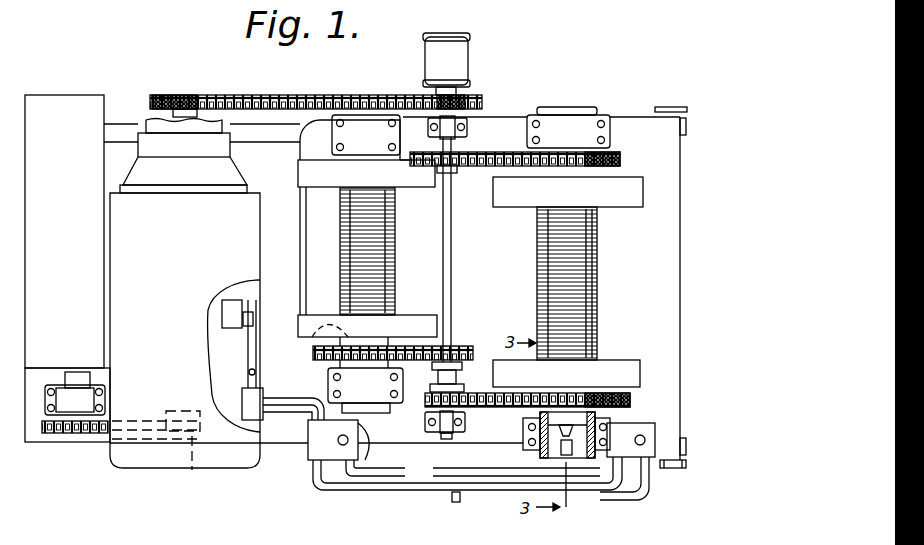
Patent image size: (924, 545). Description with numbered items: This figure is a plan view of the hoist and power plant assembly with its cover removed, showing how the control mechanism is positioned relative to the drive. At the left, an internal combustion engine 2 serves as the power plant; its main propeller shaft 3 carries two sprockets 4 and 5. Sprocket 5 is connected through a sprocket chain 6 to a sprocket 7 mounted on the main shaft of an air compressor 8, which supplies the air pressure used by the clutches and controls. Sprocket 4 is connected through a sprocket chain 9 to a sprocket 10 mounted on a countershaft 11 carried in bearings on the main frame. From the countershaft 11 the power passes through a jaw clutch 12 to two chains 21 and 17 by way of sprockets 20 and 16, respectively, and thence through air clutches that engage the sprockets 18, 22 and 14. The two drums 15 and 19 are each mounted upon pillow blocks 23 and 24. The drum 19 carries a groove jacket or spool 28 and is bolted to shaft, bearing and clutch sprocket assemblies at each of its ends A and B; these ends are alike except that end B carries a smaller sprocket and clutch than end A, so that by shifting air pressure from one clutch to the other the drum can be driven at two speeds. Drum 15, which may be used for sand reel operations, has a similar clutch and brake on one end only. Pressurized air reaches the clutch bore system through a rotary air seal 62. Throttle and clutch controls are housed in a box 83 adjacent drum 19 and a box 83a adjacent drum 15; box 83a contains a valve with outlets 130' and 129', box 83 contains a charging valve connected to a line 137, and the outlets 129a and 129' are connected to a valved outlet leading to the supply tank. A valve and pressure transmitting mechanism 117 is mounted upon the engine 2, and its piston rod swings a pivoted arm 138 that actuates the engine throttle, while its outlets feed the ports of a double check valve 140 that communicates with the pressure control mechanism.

The internal combustion engine 2 is at (170, 252).
The main propeller shaft 3 is at (181, 118).
The sprocket 4 is at (182, 97).
The sprocket 5 is at (194, 471).
The sprocket chain 6 is at (110, 448).
The sprocket 7 is at (68, 434).
The air compressor 8 is at (70, 266).
The sprocket chain 9 is at (297, 94).
The sprocket 10 is at (480, 102).
The countershaft 11 is at (452, 236).
The jaw clutch 12 is at (468, 370).
The sprocket 14 is at (312, 354).
The drum 15 is at (341, 238).
The sprocket 16 is at (425, 414).
The chain 17 is at (487, 405).
The sprocket 18 is at (632, 402).
The drum 19 is at (598, 247).
The sprocket 20 is at (457, 176).
The chain 21 is at (500, 152).
The sprocket 22 is at (623, 161).
The pillow block 23 is at (328, 388).
The pillow block 24 is at (376, 147).
The groove jacket or spool 28 is at (607, 283).
The rotary air seal 62 is at (557, 456).
The box 83 is at (655, 431).
The box 83a is at (308, 452).
The valve and pressure transmitting mechanism 117 is at (243, 393).
The outlet 129' is at (434, 488).
The outlet 129a is at (650, 487).
The outlet 130' is at (473, 489).
The line 137 is at (606, 494).
The arm 138 is at (250, 366).
The double check valve 140 is at (459, 503).
The drum end A is at (648, 381).
The drum end B is at (614, 207).